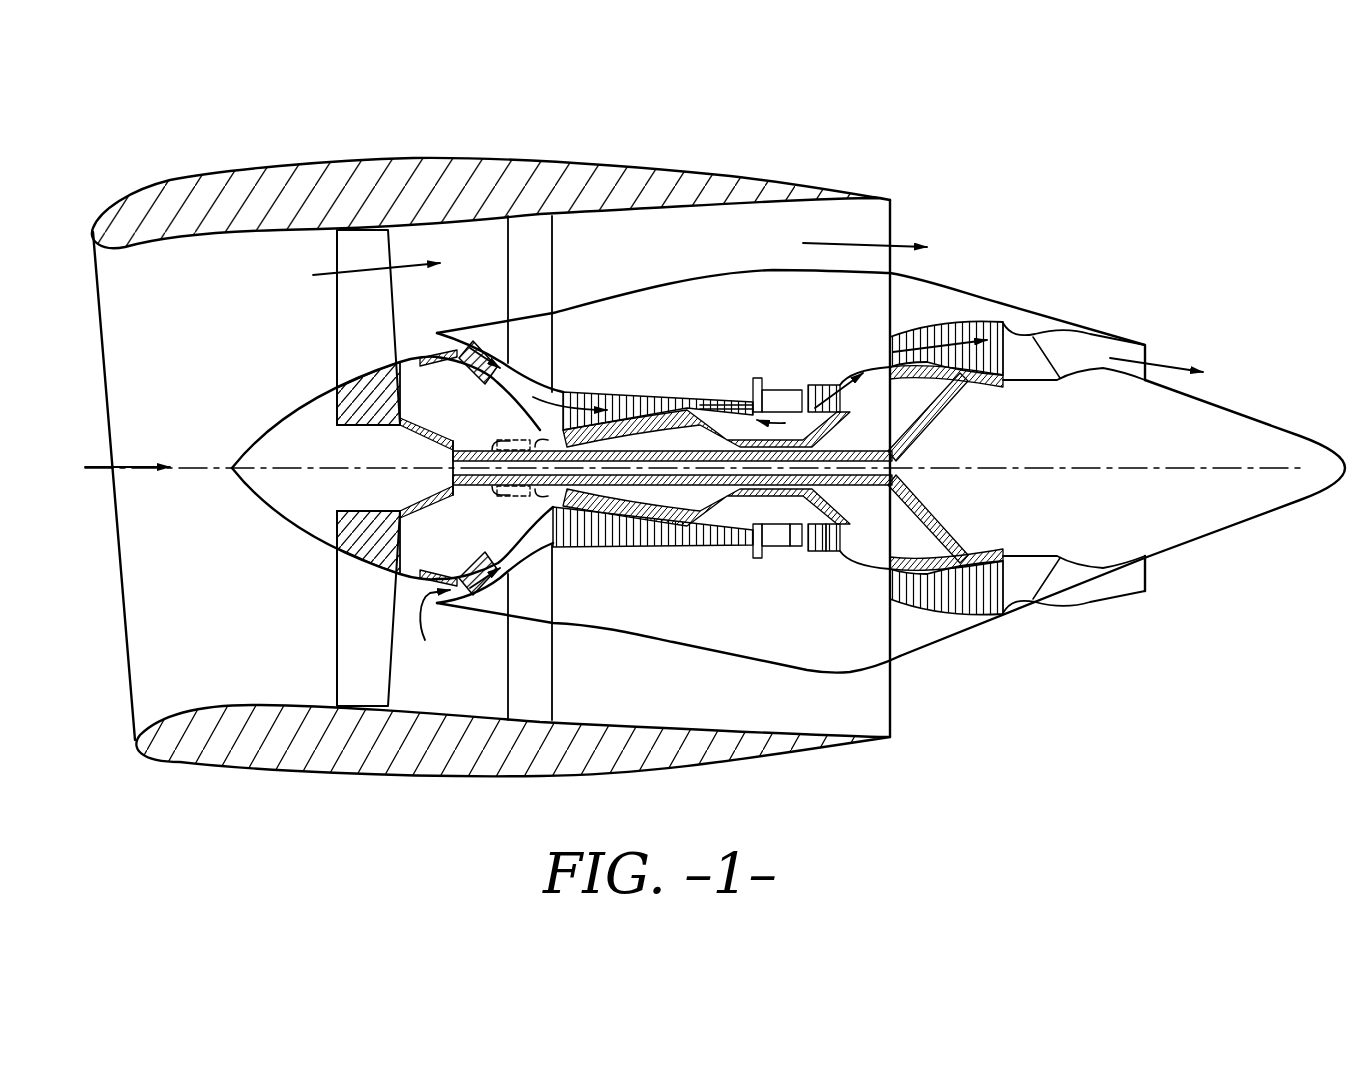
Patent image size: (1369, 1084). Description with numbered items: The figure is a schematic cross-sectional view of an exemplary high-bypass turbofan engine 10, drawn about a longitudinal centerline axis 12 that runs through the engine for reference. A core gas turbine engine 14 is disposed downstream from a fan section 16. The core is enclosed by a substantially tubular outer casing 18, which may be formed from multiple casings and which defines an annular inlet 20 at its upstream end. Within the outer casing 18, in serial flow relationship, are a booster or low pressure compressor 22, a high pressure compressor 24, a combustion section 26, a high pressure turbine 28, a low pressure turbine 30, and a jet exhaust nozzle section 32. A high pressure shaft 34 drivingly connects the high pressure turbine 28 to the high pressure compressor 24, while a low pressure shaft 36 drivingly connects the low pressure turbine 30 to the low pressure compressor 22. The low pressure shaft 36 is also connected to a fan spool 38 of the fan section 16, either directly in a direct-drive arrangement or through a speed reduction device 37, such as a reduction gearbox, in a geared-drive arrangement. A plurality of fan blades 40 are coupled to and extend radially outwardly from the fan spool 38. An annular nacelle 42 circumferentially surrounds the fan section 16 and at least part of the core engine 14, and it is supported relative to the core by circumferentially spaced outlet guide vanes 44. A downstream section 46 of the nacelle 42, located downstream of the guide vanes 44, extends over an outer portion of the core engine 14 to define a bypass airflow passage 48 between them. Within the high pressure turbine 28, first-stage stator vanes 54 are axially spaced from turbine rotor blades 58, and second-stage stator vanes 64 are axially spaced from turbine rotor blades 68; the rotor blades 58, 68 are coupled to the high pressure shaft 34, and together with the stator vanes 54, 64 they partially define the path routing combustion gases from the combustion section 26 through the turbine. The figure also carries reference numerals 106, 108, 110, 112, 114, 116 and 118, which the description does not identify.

The turbofan engine 10 is at (1135, 225).
The longitudinal centerline axis 12 is at (1062, 467).
The core turbine engine 14 is at (727, 337).
The fan section 16 is at (413, 142).
The outer casing 18 is at (740, 660).
The annular inlet 20 is at (435, 630).
The low pressure compressor 22 is at (507, 560).
The high pressure compressor 24 is at (583, 540).
The combustion section 26 is at (773, 552).
The high pressure turbine 28 is at (850, 545).
The low pressure turbine 30 is at (987, 620).
The jet exhaust nozzle section 32 is at (1147, 350).
The high pressure shaft 34 is at (817, 415).
The low pressure shaft 36 is at (497, 447).
The speed reduction device 37 is at (522, 435).
The fan spool 38 is at (360, 428).
The fan blades 40 is at (330, 652).
The nacelle 42 is at (400, 780).
The outlet guide vanes 44 is at (553, 238).
The downstream section of nacelle 46 is at (705, 172).
The bypass airflow passage 48 is at (695, 259).
The stator vanes 54 is at (793, 553).
The turbine rotor blades 58 is at (803, 557).
The stator vanes 64 is at (822, 557).
The turbine rotor blades 68 is at (835, 558).
The inlet airflow 106 is at (127, 463).
The bypass airflow 108 is at (357, 265).
The core airflow 110 is at (420, 347).
The compressed air flow 112 is at (750, 412).
The exhaust gas flow 114 is at (827, 383).
The high pressure turbine 116 is at (897, 350).
The turbine casing 118 is at (913, 330).